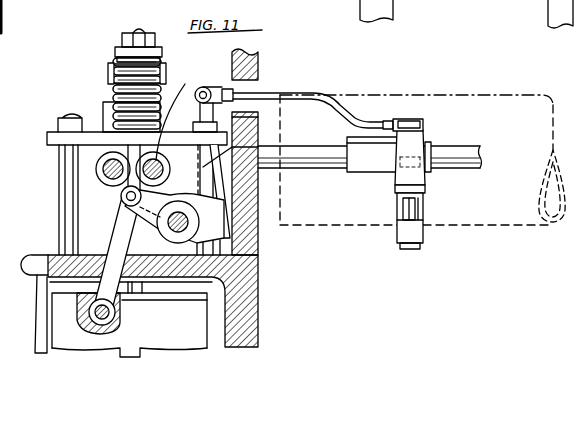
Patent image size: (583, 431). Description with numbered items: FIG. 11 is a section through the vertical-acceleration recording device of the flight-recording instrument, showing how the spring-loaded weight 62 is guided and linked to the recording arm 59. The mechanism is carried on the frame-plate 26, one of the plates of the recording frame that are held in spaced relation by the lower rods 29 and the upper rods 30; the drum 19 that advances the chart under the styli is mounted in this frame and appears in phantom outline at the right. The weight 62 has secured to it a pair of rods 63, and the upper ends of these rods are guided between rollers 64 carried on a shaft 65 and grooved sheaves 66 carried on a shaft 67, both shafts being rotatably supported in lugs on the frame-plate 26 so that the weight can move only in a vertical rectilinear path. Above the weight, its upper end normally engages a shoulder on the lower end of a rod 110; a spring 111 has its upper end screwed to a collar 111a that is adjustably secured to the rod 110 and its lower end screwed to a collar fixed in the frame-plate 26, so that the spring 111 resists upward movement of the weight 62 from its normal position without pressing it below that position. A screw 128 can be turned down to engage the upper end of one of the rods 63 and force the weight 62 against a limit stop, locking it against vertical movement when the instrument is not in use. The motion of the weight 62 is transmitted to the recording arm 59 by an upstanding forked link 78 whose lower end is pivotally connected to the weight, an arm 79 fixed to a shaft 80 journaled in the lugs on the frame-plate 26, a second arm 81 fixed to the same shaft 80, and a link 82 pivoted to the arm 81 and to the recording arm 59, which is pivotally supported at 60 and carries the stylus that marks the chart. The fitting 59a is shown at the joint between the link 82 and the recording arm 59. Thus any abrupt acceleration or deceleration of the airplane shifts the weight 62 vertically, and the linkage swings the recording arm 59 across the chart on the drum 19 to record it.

The spring 111 is at (117, 52).
The collar 111a is at (158, 56).
The screw 128 is at (108, 75).
The lower rods 29 is at (0, 128).
The rollers 64 is at (100, 161).
The shaft 65 is at (100, 174).
The rod 110 is at (123, 193).
The upstanding forked link 78 is at (114, 237).
The shaft 67 is at (175, 113).
The grooved sheaves 66 is at (203, 115).
The arm 81 is at (260, 142).
The arm 79 is at (226, 203).
The shaft 80 is at (230, 234).
The frame-plate 26 is at (253, 268).
The rods 63 is at (143, 288).
The weight 62 is at (129, 325).
The link 82 is at (345, 112).
The coupling nut 59a is at (403, 117).
The recording arm 59 is at (417, 139).
The upper rods 30 is at (482, 168).
The pivot 60 is at (420, 208).
The drum 19 is at (492, 222).